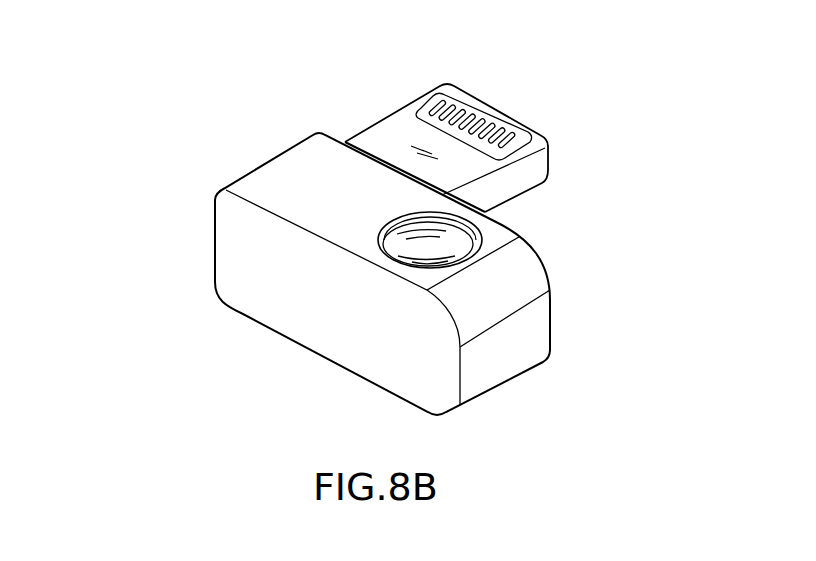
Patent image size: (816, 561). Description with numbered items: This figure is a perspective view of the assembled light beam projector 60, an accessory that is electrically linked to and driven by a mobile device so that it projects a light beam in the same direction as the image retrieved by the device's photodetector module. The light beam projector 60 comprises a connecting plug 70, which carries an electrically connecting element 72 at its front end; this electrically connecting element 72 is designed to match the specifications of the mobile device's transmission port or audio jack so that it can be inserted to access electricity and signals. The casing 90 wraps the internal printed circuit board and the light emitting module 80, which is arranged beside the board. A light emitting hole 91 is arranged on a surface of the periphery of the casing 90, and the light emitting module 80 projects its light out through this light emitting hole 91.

The light beam projector 60 is at (76, 77).
The connecting plug 70 is at (512, 109).
The electrically connecting element 72 is at (378, 137).
The light emitting module 80 is at (463, 249).
The casing 90 is at (508, 357).
The light emitting hole 91 is at (465, 220).